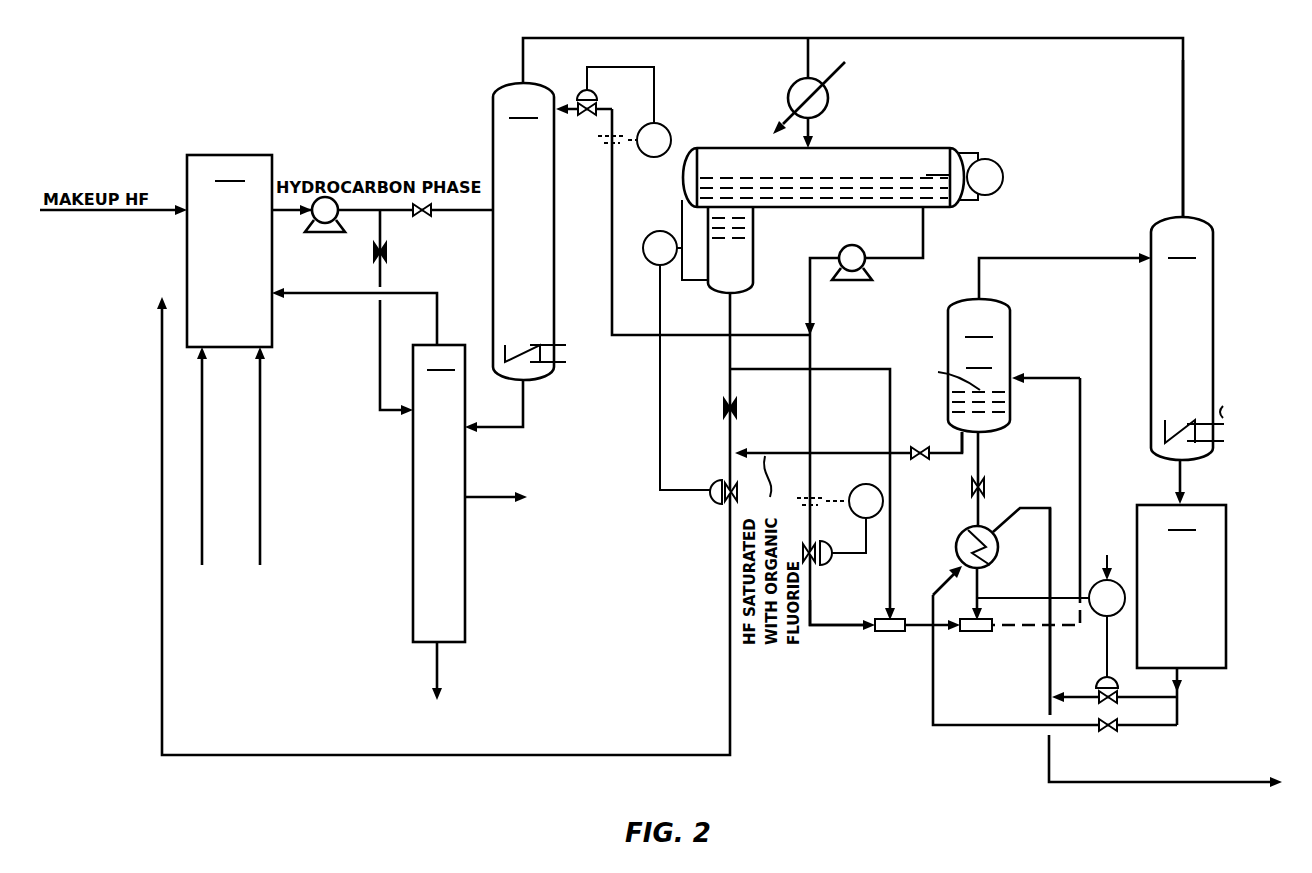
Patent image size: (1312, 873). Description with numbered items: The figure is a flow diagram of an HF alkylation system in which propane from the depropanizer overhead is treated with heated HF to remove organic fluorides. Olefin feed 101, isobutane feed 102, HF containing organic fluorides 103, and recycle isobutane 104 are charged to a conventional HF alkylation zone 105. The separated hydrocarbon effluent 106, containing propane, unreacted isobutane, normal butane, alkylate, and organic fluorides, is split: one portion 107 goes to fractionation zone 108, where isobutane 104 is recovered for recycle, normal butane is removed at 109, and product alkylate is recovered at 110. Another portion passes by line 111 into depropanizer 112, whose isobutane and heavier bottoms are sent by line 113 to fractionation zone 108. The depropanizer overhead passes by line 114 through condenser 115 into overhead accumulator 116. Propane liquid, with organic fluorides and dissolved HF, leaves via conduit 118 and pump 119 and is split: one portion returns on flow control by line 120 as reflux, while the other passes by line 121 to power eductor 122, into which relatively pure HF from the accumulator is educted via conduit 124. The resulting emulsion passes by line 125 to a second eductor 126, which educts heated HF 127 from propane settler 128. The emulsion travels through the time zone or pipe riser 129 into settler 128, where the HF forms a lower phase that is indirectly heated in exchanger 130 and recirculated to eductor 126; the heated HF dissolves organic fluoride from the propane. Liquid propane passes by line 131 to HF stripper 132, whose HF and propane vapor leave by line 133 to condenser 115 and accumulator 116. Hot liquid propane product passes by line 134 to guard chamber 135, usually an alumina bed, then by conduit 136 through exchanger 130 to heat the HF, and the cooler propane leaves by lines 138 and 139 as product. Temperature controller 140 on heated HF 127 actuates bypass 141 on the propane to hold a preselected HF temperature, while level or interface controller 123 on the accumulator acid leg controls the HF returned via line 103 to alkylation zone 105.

The olefin feed 101 is at (202, 565).
The isobutane feed 102 is at (260, 565).
The HF containing organic fluorides 103 is at (162, 697).
The recycle isobutane 104 is at (390, 293).
The HF alkylation zone 105 is at (229, 251).
The hydrocarbon effluent 106 is at (345, 218).
The portion of hydrocarbon effluent 107 is at (380, 327).
The fractionation zone 108 is at (439, 493).
The normal butane outlet 109 is at (482, 497).
The product alkylate outlet 110 is at (437, 664).
The hydrocarbon effluent line to depropanizer 111 is at (464, 210).
The depropanizer 112 is at (529, 231).
The depropanizer bottoms line 113 is at (523, 412).
The depropanizer overhead line 114 is at (523, 48).
The condenser 115 is at (830, 98).
The overhead accumulator 116 is at (843, 220).
The conduit 118 is at (923, 230).
The pump 119 is at (864, 268).
The reflux line 120 is at (612, 192).
The propane line to eductor 121 is at (812, 395).
The eductor 122 is at (874, 622).
The level or interface controller 123 is at (666, 275).
The conduit 124 is at (828, 369).
The emulsion line 125 is at (913, 631).
The eductor 126 is at (972, 631).
The heated HF 127 is at (980, 578).
The propane settler 128 is at (961, 412).
The time zone or pipe riser 129 is at (1080, 455).
The indirect heat exchanger 130 is at (960, 531).
The propane line to stripper 131 is at (980, 280).
The HF stripper 132 is at (1221, 338).
The stripper overhead line 133 is at (1183, 143).
The hot liquid propane line 134 is at (1182, 483).
The guard chamber 135 is at (1181, 586).
The conduit 136 is at (1180, 680).
The cooled propane product line 138 is at (1048, 688).
The product propane line 139 is at (1048, 762).
The temperature controller 140 is at (1090, 626).
The bypass 141 is at (1084, 690).